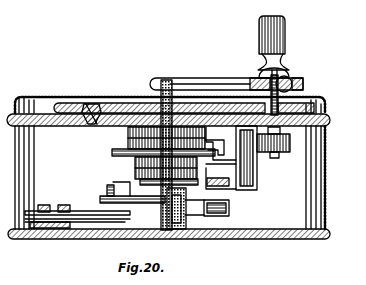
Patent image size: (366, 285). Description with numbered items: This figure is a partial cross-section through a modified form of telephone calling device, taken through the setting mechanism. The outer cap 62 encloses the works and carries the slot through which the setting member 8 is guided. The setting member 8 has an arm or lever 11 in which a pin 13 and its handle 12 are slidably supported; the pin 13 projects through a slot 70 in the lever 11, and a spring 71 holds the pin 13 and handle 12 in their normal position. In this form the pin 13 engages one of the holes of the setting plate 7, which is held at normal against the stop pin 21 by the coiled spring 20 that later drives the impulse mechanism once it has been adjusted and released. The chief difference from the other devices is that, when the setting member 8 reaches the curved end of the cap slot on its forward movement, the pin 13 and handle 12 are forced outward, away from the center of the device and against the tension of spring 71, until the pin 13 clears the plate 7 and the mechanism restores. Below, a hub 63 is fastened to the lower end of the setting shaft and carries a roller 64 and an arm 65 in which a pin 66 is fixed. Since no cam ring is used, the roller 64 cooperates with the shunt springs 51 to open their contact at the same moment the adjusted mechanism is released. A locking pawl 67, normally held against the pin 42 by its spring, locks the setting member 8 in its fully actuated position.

The setting plate 7 is at (50, 100).
The setting member 8 is at (164, 78).
The lever 11 is at (215, 81).
The handle 12 is at (260, 31).
The pin 13 is at (325, 162).
The coiled spring 20 is at (127, 134).
The stop pin 21 is at (99, 102).
The pin 42 is at (216, 158).
The shunt springs 51 is at (88, 216).
The outer cap 62 is at (27, 98).
The hub 63 is at (203, 229).
The roller 64 is at (229, 210).
The arm 65 is at (122, 190).
The pin 66 is at (106, 188).
The locking pawl 67 is at (158, 194).
The slot 70 is at (287, 80).
The spring 71 is at (280, 78).